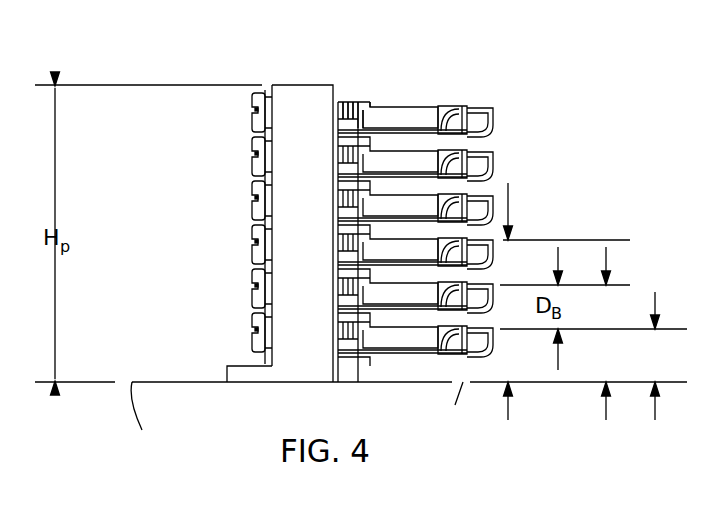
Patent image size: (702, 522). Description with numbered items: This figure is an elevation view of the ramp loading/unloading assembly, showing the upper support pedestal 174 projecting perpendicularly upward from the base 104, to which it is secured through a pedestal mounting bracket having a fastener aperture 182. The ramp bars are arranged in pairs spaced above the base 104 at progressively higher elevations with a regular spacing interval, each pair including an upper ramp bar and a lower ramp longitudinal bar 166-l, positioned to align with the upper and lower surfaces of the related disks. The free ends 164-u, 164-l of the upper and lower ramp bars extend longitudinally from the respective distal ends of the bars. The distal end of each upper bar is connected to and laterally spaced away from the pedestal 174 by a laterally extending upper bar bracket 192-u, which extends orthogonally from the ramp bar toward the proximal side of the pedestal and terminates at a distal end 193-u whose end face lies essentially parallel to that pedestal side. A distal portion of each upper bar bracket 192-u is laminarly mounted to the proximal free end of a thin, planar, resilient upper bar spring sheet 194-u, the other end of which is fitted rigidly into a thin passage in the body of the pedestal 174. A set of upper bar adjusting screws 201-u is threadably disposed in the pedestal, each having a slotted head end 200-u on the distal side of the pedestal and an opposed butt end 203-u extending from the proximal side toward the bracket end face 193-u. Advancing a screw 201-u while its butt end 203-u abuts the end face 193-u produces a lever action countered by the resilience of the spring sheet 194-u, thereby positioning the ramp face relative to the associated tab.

The base 104 is at (232, 421).
The upper support pedestal 174 is at (320, 337).
The fastener aperture 182 is at (227, 367).
The slotted head end 200-u is at (250, 132).
The upper bar adjusting screw 201-u is at (345, 100).
The butt end 203-u is at (357, 102).
The distal end 193-u is at (360, 103).
The upper bar spring sheet 194-u is at (370, 103).
The upper bar bracket 192-u is at (385, 106).
The lower ramp longitudinal bar 166-l is at (483, 133).
The free end of upper ramp bar 164-u is at (455, 107).
The free end of lower ramp bar 164-l is at (490, 125).